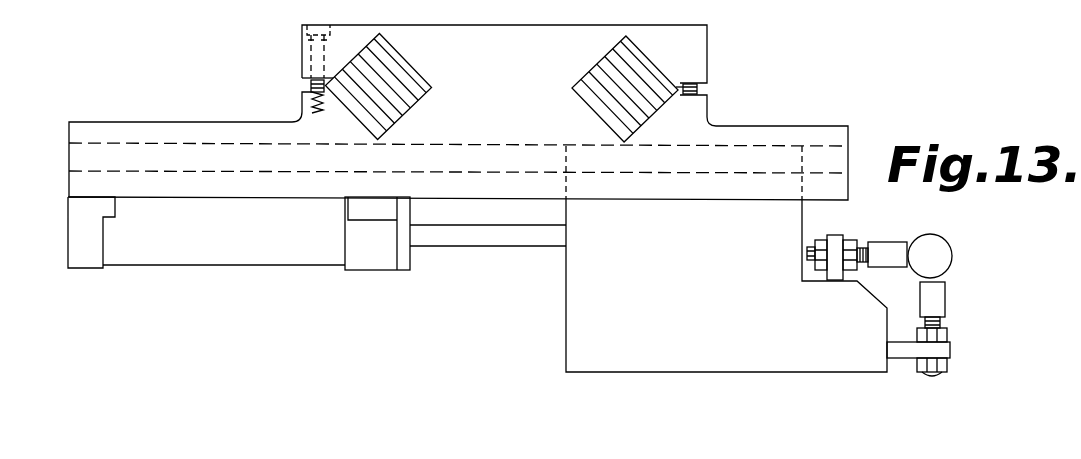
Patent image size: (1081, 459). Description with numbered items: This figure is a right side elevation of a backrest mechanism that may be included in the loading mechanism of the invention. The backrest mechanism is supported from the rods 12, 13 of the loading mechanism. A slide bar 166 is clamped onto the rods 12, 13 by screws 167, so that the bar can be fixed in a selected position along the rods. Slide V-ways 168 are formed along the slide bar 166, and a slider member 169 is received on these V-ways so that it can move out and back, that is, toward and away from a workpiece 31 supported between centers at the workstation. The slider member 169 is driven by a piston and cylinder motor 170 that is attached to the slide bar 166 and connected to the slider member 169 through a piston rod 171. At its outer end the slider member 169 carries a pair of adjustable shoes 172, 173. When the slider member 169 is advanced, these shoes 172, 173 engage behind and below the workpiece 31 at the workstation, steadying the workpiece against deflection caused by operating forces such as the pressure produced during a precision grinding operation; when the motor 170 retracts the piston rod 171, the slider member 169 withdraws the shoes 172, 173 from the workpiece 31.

The rod 12 is at (592, 59).
The rod 13 is at (407, 59).
The workpiece 31 is at (955, 255).
The slide bar 166 is at (123, 122).
The screws 167 is at (302, 53).
The slide V-ways 168 is at (95, 171).
The slider member 169 is at (685, 298).
The piston and cylinder motor 170 is at (225, 252).
The piston rod 171 is at (487, 247).
The adjustable shoe 172 is at (895, 242).
The adjustable shoe 173 is at (945, 293).